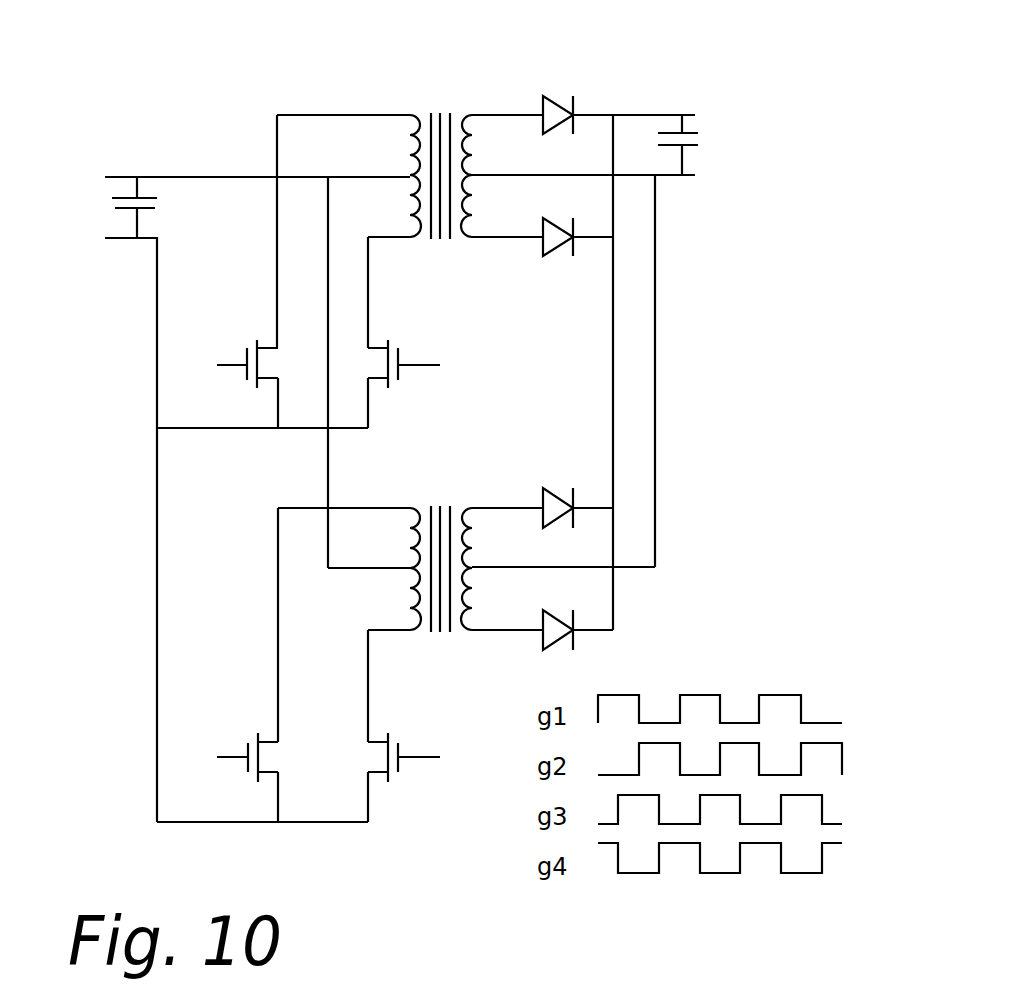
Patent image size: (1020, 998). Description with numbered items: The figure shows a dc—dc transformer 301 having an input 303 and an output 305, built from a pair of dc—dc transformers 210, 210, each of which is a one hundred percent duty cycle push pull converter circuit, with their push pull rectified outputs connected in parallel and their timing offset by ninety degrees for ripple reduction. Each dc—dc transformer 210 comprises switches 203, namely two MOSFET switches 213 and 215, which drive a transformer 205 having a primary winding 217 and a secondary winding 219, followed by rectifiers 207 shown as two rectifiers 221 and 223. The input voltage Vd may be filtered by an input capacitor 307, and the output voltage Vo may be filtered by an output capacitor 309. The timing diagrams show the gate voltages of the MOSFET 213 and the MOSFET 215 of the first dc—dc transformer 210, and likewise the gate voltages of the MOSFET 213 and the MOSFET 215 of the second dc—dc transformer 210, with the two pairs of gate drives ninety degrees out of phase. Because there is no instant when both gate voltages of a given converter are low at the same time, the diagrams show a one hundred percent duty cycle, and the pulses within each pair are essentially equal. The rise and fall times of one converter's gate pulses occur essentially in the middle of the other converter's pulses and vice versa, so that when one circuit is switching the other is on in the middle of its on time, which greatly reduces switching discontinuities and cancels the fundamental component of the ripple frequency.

The switches 203 is at (274, 590).
The transformer 205 is at (518, 325).
The rectifiers 207 is at (629, 347).
The dc—dc transformer 210 is at (241, 128).
The MOSFET switch 213 is at (266, 410).
The MOSFET switch 215 is at (381, 332).
The primary winding 217 is at (384, 140).
The secondary winding 219 is at (473, 157).
The rectifier 221 is at (585, 107).
The rectifier 223 is at (556, 270).
The dc—dc transformer 301 is at (157, 105).
The input 303 is at (100, 184).
The output 305 is at (711, 117).
The input capacitor 307 is at (112, 221).
The output capacitor 309 is at (697, 155).